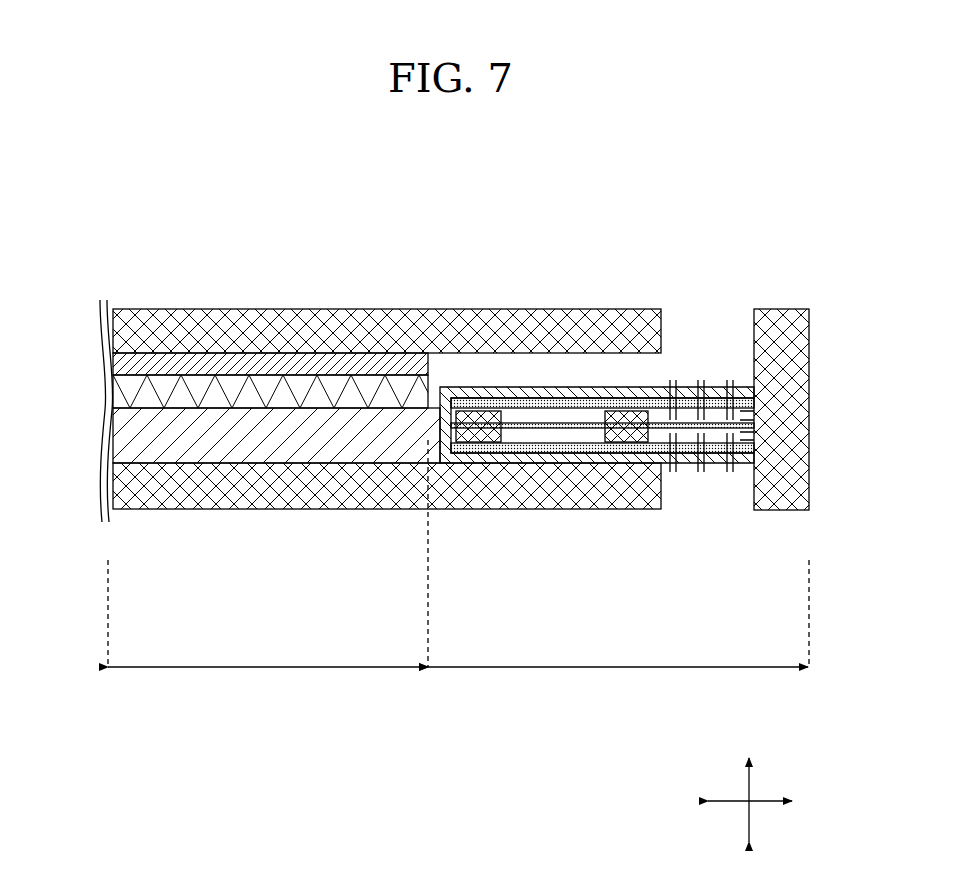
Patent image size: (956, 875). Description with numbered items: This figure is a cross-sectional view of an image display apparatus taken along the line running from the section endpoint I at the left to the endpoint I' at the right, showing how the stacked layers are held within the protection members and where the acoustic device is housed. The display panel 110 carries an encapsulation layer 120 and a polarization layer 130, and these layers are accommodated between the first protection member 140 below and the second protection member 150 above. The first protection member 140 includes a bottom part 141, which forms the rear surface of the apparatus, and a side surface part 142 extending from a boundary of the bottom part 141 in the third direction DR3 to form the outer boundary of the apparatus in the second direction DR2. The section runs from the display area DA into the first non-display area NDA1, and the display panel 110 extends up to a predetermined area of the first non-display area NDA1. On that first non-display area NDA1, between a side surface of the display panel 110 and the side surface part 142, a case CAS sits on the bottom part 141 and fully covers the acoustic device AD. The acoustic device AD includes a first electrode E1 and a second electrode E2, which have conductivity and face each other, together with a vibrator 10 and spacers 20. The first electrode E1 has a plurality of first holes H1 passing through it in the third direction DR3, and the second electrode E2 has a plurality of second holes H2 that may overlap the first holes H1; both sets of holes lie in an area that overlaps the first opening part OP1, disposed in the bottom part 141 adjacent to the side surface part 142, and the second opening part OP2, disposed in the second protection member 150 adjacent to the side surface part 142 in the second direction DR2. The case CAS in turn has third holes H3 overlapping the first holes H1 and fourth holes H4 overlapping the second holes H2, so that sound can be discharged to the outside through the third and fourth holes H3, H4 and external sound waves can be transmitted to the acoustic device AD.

The second protection member 150 is at (120, 327).
The polarization layer 130 is at (120, 362).
The encapsulation layer 120 is at (120, 390).
The display panel 110 is at (120, 433).
The bottom part 141 is at (628, 497).
The side surface part 142 is at (780, 515).
The first protection member 140 is at (797, 596).
The case CAS is at (553, 460).
The vibrator 10 is at (478, 414).
The second electrode E2 is at (528, 402).
The first electrode E1 is at (580, 447).
The spacers 20 is at (634, 437).
The acoustic device AD is at (655, 254).
The fourth holes H4 is at (730, 382).
The third holes H3 is at (730, 470).
The second holes H2 is at (745, 420).
The first holes H1 is at (745, 440).
The first opening part OP1 is at (735, 322).
The second opening part OP2 is at (730, 498).
The cross-section line I is at (108, 600).
The cross-section line end I' is at (811, 600).
The display area DA is at (268, 680).
The first non-display area NDA1 is at (618, 680).
The second direction DR2 is at (774, 801).
The third direction DR3 is at (750, 788).